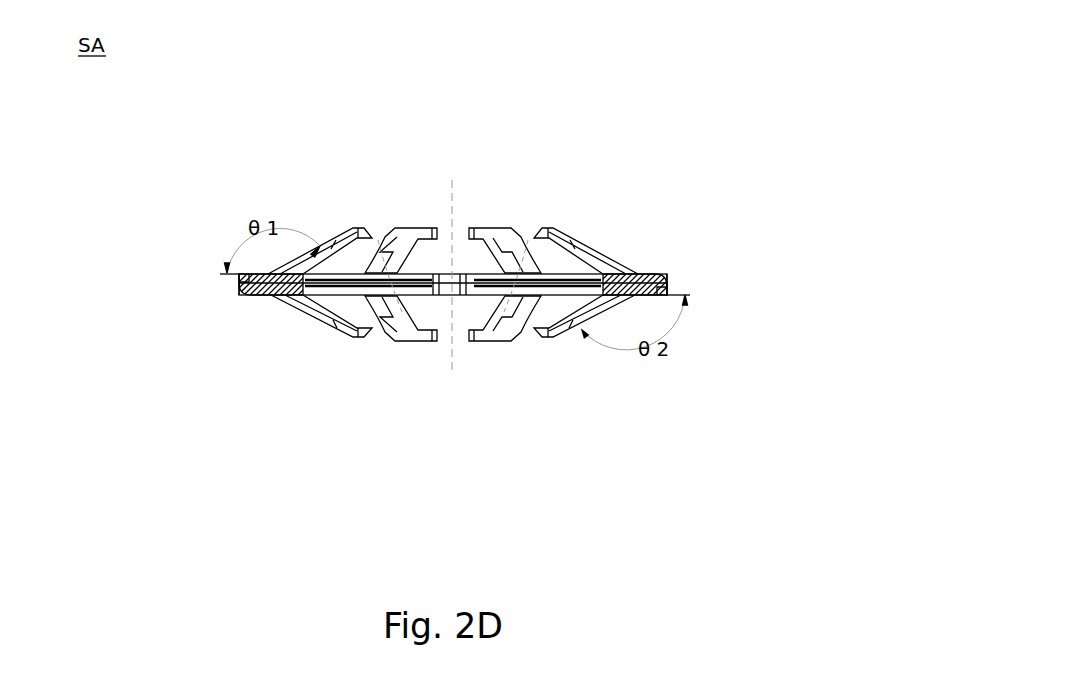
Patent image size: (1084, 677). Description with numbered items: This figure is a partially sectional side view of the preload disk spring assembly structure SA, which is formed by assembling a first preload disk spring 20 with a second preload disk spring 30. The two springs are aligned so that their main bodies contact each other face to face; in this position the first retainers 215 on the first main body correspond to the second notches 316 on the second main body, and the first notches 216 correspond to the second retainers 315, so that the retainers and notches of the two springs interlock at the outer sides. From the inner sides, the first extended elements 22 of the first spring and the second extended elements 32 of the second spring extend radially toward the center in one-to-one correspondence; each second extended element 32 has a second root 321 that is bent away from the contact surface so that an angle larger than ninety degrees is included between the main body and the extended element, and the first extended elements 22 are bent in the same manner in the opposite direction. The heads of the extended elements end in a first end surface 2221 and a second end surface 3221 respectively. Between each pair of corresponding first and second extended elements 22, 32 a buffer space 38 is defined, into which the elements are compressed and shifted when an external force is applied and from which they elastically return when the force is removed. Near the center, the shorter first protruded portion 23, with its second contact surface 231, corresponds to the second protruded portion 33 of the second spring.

The first preload disk spring 20 is at (716, 97).
The second preload disk spring 30 is at (703, 430).
The first extended element 22 is at (374, 224).
The first end surface 2221 is at (422, 232).
The first protruded portion 23 is at (464, 230).
The second contact surface 231 is at (560, 226).
The second retainer 315 is at (236, 275).
The second notch 316 is at (672, 288).
The first notch 216 is at (237, 278).
The first retainer 215 is at (667, 297).
The second extended element 32 is at (360, 333).
The second end surface 3221 is at (420, 333).
The second protruded portion 33 is at (448, 300).
The second root 321 is at (510, 340).
The buffer space 38 is at (525, 313).